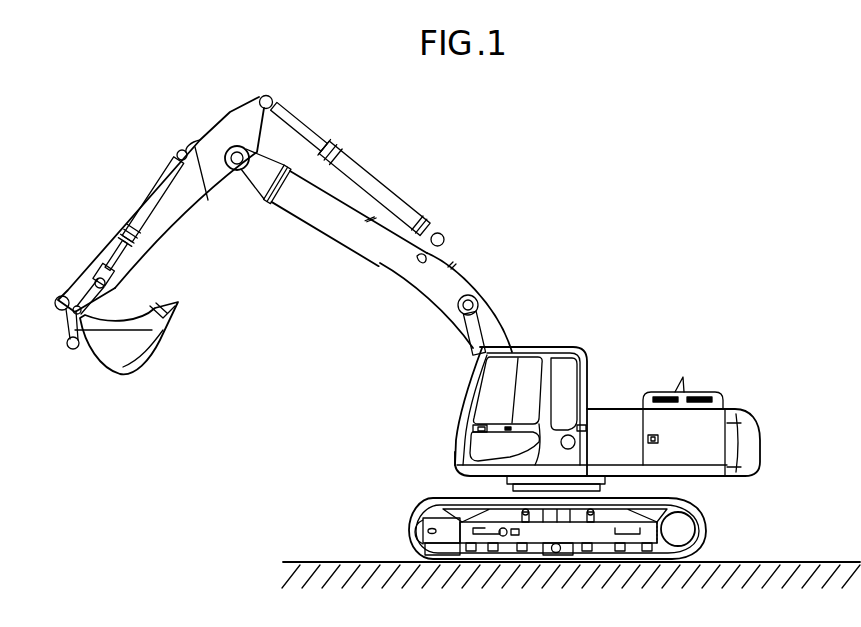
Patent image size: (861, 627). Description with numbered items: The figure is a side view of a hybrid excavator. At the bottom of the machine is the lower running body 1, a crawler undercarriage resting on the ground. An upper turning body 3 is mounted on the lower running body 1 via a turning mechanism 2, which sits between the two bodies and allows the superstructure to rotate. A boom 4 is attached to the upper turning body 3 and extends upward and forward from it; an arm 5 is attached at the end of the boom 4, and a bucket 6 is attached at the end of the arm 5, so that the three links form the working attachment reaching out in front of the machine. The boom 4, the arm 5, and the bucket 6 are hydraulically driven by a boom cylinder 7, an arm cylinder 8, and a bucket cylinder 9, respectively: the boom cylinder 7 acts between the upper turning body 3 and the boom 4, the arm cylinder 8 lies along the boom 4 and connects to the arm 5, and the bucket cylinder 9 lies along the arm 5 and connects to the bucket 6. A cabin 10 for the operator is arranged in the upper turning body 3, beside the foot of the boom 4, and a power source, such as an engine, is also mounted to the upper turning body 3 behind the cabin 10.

The lower running body 1 is at (408, 529).
The turning mechanism 2 is at (612, 489).
The upper turning body 3 is at (617, 408).
The boom 4 is at (403, 273).
The arm 5 is at (185, 212).
The bucket 6 is at (118, 368).
The boom cylinder 7 is at (472, 340).
The arm cylinder 8 is at (393, 202).
The bucket cylinder 9 is at (142, 202).
The cabin 10 is at (574, 343).